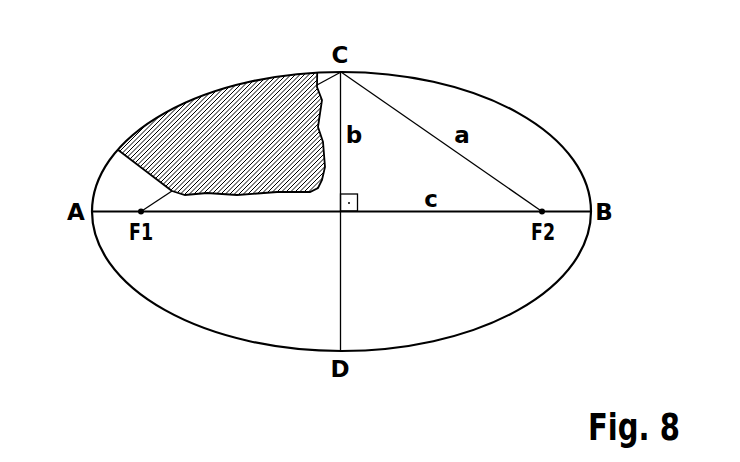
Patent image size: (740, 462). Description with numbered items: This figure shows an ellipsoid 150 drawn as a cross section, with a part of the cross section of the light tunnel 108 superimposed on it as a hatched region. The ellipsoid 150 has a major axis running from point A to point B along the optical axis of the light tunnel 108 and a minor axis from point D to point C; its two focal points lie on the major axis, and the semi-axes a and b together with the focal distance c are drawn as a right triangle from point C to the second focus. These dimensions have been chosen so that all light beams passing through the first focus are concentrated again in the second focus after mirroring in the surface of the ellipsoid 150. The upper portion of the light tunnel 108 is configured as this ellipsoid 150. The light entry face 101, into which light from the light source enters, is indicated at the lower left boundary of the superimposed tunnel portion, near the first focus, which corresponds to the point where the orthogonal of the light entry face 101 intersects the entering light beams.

The ellipsoid 150 is at (547, 128).
The light tunnel 108 is at (209, 140).
The light entry face 101 is at (142, 170).